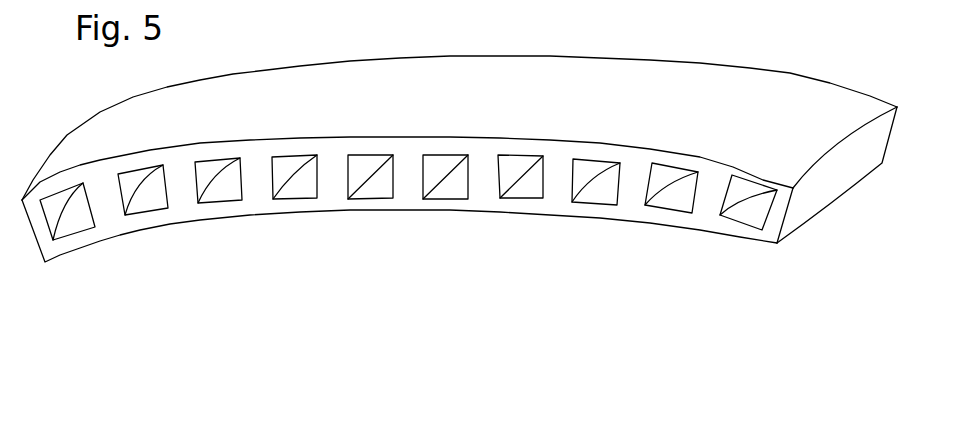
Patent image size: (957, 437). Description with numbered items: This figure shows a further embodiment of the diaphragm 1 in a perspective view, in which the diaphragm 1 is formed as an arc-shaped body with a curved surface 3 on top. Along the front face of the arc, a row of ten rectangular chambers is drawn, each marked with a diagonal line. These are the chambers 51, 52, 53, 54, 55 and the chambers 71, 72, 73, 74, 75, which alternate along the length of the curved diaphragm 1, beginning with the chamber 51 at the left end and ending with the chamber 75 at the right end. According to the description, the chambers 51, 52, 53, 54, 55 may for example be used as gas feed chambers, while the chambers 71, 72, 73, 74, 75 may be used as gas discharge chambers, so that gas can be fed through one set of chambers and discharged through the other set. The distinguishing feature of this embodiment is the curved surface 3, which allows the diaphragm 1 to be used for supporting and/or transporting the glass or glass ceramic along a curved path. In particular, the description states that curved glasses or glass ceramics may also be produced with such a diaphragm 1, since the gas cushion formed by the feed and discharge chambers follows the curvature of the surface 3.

The diaphragm 1 is at (698, 35).
The curved surface 3 is at (557, 107).
The chamber 51 is at (79, 235).
The chamber 52 is at (231, 203).
The chamber 53 is at (376, 199).
The chamber 54 is at (527, 198).
The chamber 55 is at (675, 213).
The chamber 71 is at (157, 213).
The chamber 72 is at (305, 199).
The chamber 73 is at (450, 199).
The chamber 74 is at (598, 205).
The chamber 75 is at (747, 228).